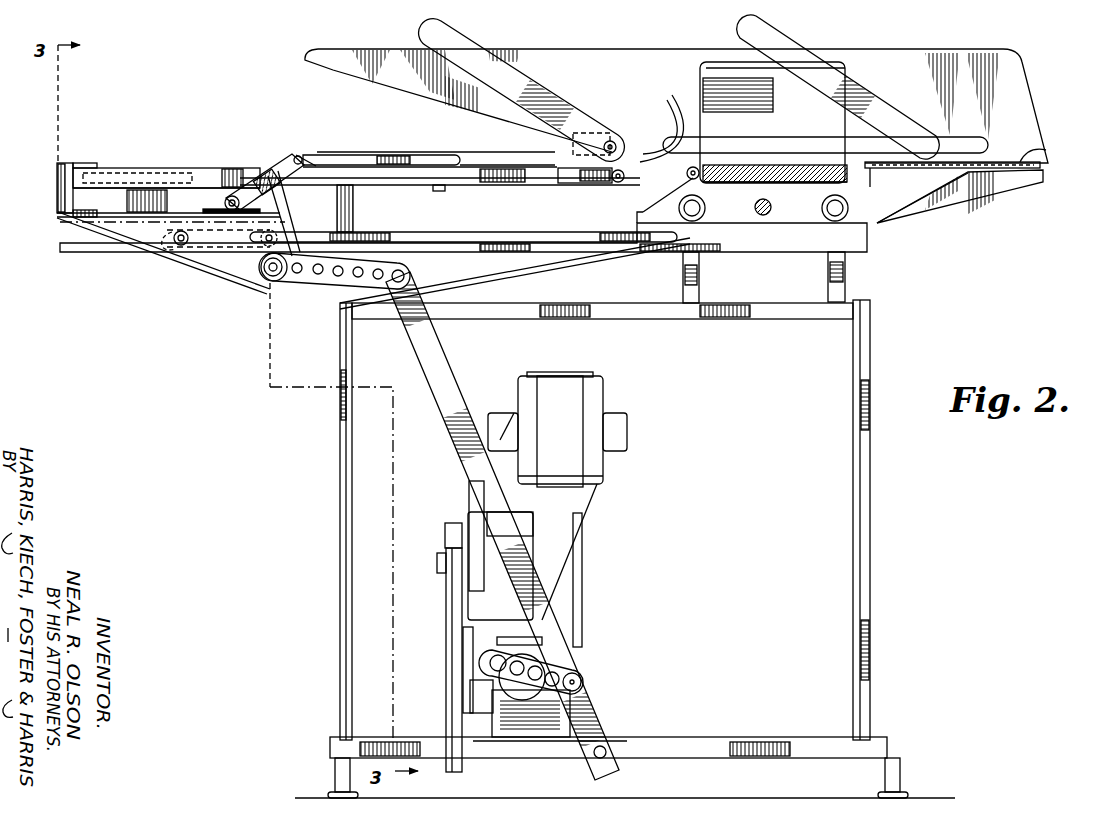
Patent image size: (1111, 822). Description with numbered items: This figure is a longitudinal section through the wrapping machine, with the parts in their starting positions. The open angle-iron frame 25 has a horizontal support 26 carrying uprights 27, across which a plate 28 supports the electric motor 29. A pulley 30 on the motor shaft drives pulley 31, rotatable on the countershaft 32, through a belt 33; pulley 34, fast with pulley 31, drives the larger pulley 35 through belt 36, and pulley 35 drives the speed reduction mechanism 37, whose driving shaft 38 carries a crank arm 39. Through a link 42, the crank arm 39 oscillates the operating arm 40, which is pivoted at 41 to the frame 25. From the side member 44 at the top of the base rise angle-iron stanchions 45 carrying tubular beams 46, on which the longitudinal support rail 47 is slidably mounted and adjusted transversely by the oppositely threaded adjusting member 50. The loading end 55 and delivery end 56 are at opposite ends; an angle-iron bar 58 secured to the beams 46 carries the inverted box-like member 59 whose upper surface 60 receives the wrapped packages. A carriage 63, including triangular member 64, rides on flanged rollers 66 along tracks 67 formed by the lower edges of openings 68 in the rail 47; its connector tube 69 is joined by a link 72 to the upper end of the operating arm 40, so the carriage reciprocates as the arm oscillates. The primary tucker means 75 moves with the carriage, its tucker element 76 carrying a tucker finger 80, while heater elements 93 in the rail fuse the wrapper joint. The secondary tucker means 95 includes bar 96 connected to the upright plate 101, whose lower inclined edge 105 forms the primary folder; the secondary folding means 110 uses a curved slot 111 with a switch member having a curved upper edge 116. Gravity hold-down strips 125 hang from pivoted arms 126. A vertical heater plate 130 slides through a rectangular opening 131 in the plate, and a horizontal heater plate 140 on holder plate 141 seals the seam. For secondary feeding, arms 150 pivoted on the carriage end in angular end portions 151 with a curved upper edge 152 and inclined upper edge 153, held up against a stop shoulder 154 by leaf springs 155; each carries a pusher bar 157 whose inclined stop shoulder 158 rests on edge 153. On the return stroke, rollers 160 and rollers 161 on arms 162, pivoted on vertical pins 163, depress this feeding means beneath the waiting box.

The frame 25 is at (338, 486).
The horizontal support 26 is at (630, 737).
The uprights 27 is at (497, 622).
The plate 28 is at (598, 492).
The electric motor 29 is at (560, 372).
The pulley 30 is at (488, 420).
The pulley 31 is at (533, 530).
The countershaft 32 is at (437, 560).
The belt 33 is at (469, 498).
The pulley 34 is at (445, 530).
The larger pulley 35 is at (446, 711).
The belt 36 is at (446, 602).
The speed reduction mechanism 37 is at (535, 722).
The driving shaft 38 is at (492, 678).
The crank arm 39 is at (497, 644).
The operating arm 40 is at (462, 452).
The pivot 41 is at (594, 758).
The link 42 is at (586, 692).
The longitudinal side member 44 is at (622, 319).
The angle-iron stanchions 45 is at (699, 275).
The tubular beams 46 is at (690, 252).
The longitudinal support rail 47 is at (615, 244).
The adjusting member 50 is at (765, 216).
The loading end 55 is at (162, 150).
The delivery end 56 is at (1048, 112).
The angle-iron bar 58 is at (915, 208).
The inverted box-like member 59 is at (990, 196).
The upper surface 60 is at (1044, 158).
The carriage 63 is at (176, 246).
The carriage member 64 is at (118, 238).
The flanged rollers 66 is at (165, 248).
The tracks 67 is at (430, 232).
The longitudinally extending openings 68 is at (388, 232).
The connector tube 69 is at (271, 282).
The link 72 is at (306, 284).
The primary tucker means 75 is at (54, 160).
The primary tucker element 76 is at (68, 198).
The tucker finger 80 is at (80, 161).
The heater elements 93 is at (118, 168).
The secondary tucker means 95 is at (463, 150).
The bar 96 is at (380, 152).
The upright plate 101 is at (570, 62).
The lower inclined edge 105 is at (360, 83).
The secondary folding means 110 is at (640, 130).
The slot 111 is at (662, 126).
The upper edge 116 is at (630, 158).
The horizontal strips 125 is at (790, 137).
The arms 126 is at (505, 68).
The vertical heater plate 130 is at (700, 72).
The rectangular opening 131 is at (732, 64).
The heater plate 140 is at (750, 165).
The holder plate 141 is at (752, 183).
The arms 150 is at (290, 160).
The angular end portion 151 is at (316, 170).
The curved upper edge 152 is at (296, 157).
The inclined upper edge 153 is at (308, 165).
The stop shoulder 154 is at (229, 195).
The leaf springs 155 is at (262, 245).
The pusher bar 157 is at (427, 166).
The inclined stop shoulder 158 is at (306, 186).
The rollers 160 is at (685, 180).
The rollers 161 is at (612, 182).
The arms 162 is at (548, 190).
The vertical pins 163 is at (441, 192).